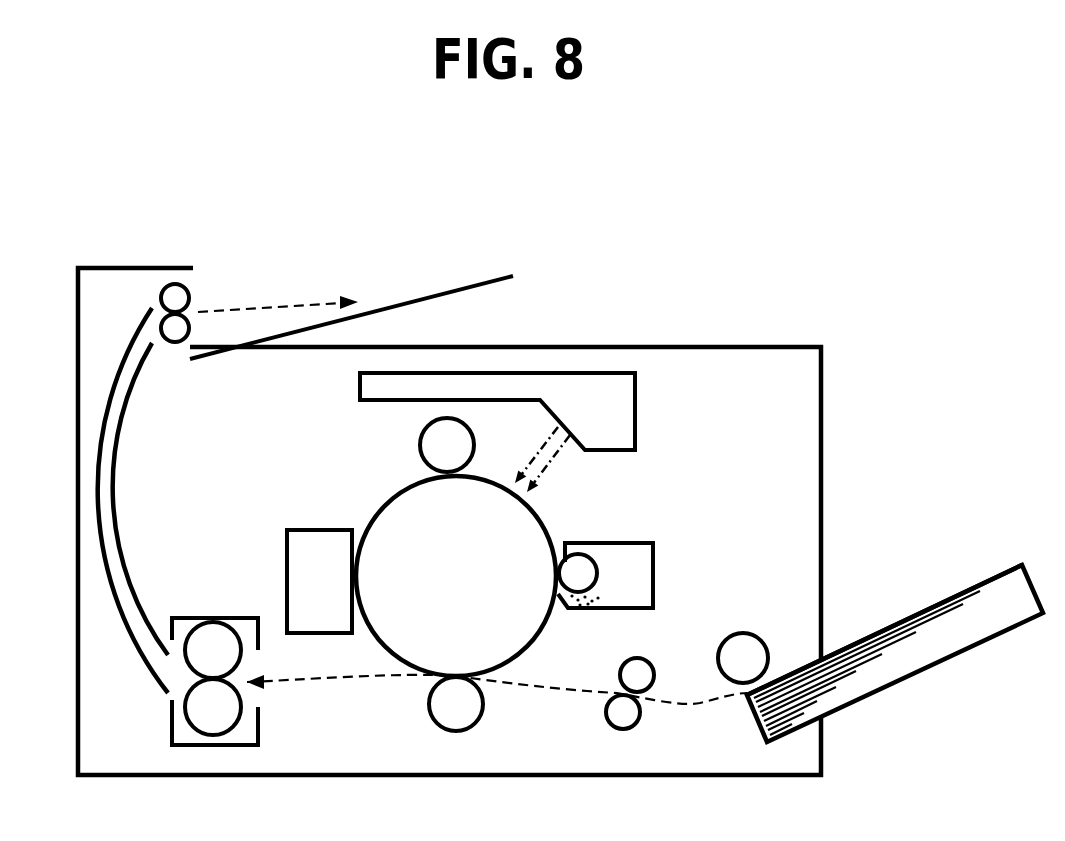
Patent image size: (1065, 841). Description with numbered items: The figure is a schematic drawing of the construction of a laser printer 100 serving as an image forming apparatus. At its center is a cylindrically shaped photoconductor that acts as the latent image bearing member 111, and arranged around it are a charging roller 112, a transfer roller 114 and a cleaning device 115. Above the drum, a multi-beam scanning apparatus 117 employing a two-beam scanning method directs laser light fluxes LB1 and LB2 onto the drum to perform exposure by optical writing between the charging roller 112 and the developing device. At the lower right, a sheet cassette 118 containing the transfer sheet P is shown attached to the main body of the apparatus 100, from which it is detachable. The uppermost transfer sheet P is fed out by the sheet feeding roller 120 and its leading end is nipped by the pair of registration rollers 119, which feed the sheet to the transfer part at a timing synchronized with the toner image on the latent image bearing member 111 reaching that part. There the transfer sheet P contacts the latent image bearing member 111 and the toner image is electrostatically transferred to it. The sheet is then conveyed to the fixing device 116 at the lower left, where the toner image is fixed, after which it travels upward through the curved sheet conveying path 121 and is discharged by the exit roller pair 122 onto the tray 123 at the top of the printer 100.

The laser printer 100 is at (800, 258).
The latent image bearing member 111 is at (478, 592).
The charging roller 112 is at (432, 443).
The transfer roller 114 is at (473, 718).
The cleaning device 115 is at (312, 540).
The fixing device 116 is at (257, 720).
The multi-beam scanning apparatus 117 is at (636, 407).
The sheet cassette 118 is at (887, 690).
The pair of registration rollers 119 is at (656, 672).
The sheet feeding roller 120 is at (745, 645).
The sheet conveying path 121 is at (113, 507).
The exit roller pair 122 is at (160, 313).
The tray 123 is at (475, 260).
The laser light flux LB1 is at (535, 460).
The laser light flux LB2 is at (547, 467).
The transfer sheet P is at (858, 640).